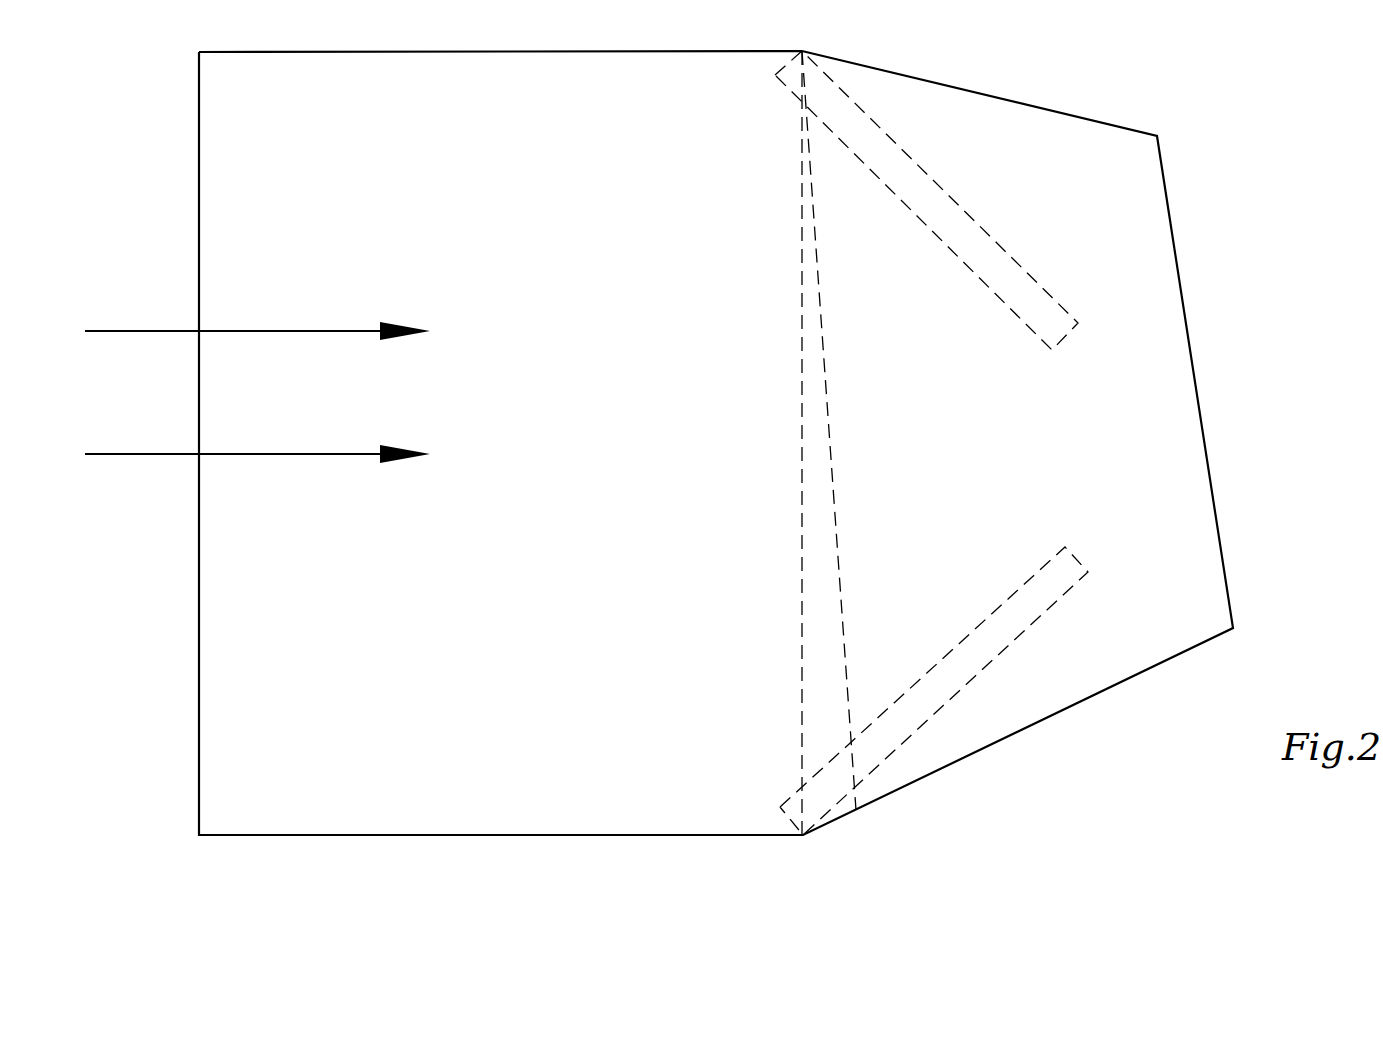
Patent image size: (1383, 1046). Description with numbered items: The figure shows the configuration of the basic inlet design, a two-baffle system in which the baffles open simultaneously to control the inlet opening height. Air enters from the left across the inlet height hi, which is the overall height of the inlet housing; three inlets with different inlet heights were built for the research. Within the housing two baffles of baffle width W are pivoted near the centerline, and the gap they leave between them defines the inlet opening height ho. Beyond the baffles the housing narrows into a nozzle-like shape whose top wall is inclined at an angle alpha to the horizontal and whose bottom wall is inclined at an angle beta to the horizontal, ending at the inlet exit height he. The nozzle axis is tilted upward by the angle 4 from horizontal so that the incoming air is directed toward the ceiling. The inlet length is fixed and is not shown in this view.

The baffle width W is at (767, 85).
The inlet height hi is at (547, 70).
The inlet opening height ho is at (1173, 330).
The inlet exit height he is at (1172, 134).
The angle between top of inlet housing and horizontal alpha is at (1026, 67).
The angle between bottom of inlet housing and horizontal beta is at (1032, 809).
The four degree upward nozzle direction 4 is at (923, 583).